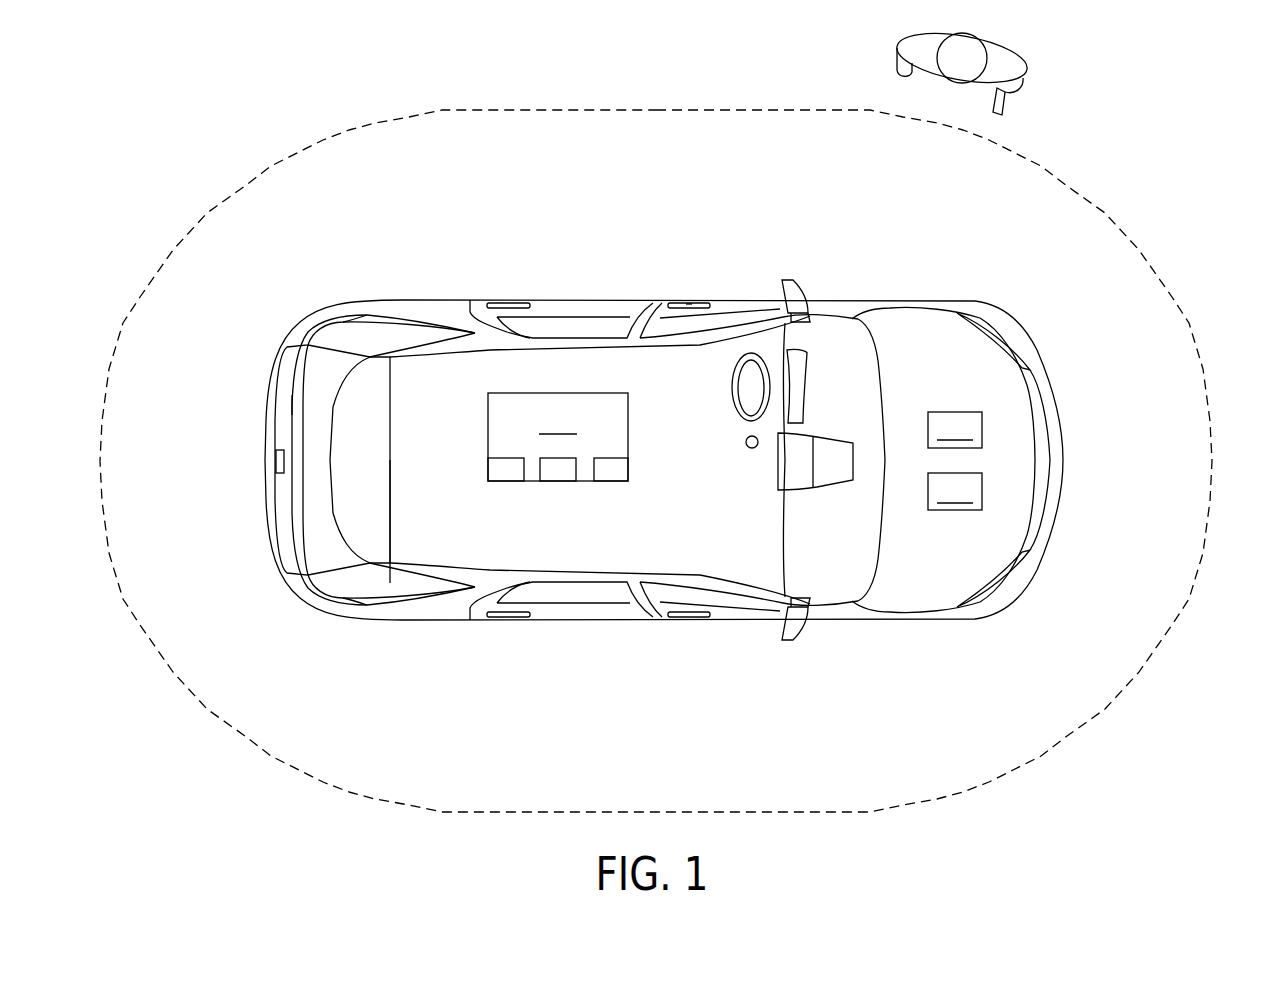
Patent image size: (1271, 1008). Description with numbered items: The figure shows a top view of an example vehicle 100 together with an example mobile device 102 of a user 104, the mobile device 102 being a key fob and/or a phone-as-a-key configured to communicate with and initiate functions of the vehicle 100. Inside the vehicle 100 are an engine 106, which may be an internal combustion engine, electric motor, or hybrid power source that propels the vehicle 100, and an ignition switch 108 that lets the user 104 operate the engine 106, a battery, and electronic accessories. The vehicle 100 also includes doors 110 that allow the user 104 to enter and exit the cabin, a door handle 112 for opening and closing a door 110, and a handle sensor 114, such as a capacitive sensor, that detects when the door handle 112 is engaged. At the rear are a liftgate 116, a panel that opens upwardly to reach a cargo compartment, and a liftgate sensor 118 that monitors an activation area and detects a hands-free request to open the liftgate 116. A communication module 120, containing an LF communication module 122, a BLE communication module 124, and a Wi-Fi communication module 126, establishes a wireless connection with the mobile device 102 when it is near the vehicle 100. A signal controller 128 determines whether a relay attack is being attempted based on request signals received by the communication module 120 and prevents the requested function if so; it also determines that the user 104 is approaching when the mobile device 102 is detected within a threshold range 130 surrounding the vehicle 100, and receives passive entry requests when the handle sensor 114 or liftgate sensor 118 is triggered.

The vehicle 100 is at (945, 299).
The mobile device 102 is at (1008, 97).
The user 104 is at (953, 81).
The engine 106 is at (955, 430).
The ignition switch 108 is at (752, 449).
The doors 110 is at (748, 302).
The door handle 112 is at (687, 303).
The handle sensor 114 is at (673, 302).
The liftgate 116 is at (292, 406).
The liftgate sensor 118 is at (280, 461).
The communication module 120 is at (562, 466).
The LF communication module 122 is at (505, 472).
The BLE communication module 124 is at (558, 472).
The Wi-Fi communication module 126 is at (612, 472).
The signal controller 128 is at (955, 491).
The threshold range 130 is at (1120, 213).